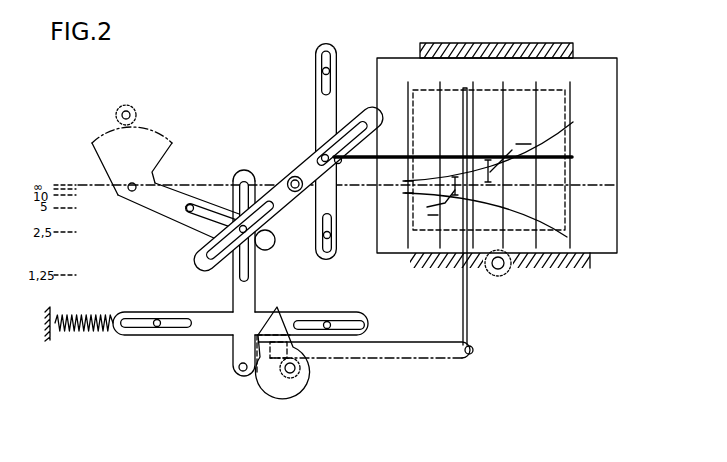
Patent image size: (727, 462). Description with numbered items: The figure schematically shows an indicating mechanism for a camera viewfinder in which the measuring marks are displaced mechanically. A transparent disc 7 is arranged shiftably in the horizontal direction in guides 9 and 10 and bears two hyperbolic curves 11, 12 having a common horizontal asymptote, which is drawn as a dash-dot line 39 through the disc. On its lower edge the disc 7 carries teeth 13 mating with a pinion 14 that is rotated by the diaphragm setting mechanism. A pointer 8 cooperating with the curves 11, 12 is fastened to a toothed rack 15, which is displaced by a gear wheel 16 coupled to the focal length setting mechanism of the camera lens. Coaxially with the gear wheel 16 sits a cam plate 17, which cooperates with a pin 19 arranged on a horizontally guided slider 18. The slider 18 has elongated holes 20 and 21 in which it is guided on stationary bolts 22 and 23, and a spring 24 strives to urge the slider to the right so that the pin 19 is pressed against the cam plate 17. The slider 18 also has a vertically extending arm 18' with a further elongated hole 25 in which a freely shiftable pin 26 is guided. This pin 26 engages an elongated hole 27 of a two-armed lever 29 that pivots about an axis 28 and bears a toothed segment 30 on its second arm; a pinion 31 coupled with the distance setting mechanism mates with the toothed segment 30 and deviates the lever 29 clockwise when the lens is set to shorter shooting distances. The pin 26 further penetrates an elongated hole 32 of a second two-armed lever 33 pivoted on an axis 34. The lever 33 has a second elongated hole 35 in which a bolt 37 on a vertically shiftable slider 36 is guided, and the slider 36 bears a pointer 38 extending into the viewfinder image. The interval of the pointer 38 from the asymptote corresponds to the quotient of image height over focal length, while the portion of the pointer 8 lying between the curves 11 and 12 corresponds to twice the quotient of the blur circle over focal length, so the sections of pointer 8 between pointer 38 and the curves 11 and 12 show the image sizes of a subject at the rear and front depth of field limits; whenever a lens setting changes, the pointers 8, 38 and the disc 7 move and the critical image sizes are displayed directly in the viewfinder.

The transparent disc 7 is at (603, 63).
The pointer 8 is at (462, 313).
The guide 9 is at (540, 49).
The guide 10 is at (437, 263).
The hyperbolic curve 11 is at (575, 122).
The hyperbolic curve 12 is at (569, 237).
The teeth 13 is at (557, 262).
The pinion 14 is at (503, 273).
The toothed rack 15 is at (395, 359).
The gear wheel 16 is at (298, 371).
The cam plate 17 is at (272, 391).
The slider 18 is at (240, 341).
The vertically extending arm 18' is at (265, 278).
The pin 19 is at (238, 376).
The elongated hole 20 is at (170, 333).
The elongated hole 21 is at (352, 318).
The stationary bolt 22 is at (155, 320).
The stationary bolt 23 is at (326, 320).
The spring 24 is at (73, 331).
The elongated hole 25 is at (236, 174).
The pin 26 is at (271, 248).
The elongated hole 27 is at (186, 213).
The axis 28 is at (123, 197).
The two-armed lever 29 is at (153, 199).
The toothed segment 30 is at (106, 137).
The pinion 31 is at (138, 113).
The elongated hole 32 is at (276, 209).
The two-armed lever 33 is at (304, 168).
The axis 34 is at (291, 179).
The elongated hole 35 is at (357, 117).
The slider 36 is at (315, 113).
The bolt 37 is at (341, 165).
The pointer 38 is at (387, 156).
The optical axis 39 is at (575, 185).